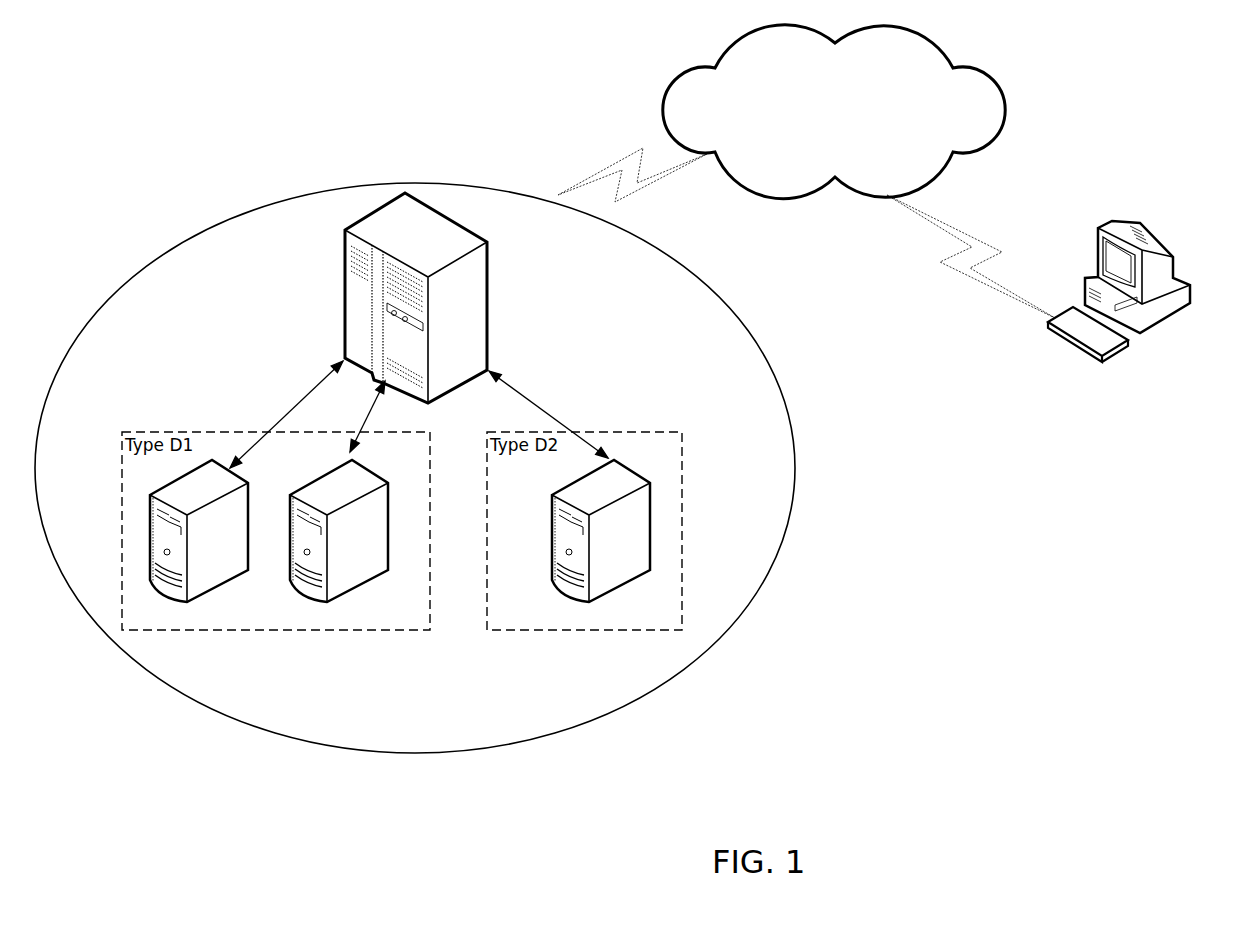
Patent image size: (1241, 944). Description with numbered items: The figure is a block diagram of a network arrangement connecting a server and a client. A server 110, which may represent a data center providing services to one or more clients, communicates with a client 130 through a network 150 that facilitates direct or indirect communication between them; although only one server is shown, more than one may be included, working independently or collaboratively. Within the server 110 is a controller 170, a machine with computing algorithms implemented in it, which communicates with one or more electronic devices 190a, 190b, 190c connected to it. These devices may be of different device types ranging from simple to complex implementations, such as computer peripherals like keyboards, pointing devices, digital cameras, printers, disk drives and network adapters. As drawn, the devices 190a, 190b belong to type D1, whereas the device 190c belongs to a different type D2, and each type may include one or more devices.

The server 110 is at (262, 205).
The client 130 is at (1108, 222).
The network 150 is at (834, 112).
The controller 170 is at (357, 288).
The electronic device 190a is at (226, 584).
The electronic device 190b is at (370, 577).
The electronic device 190c is at (630, 577).